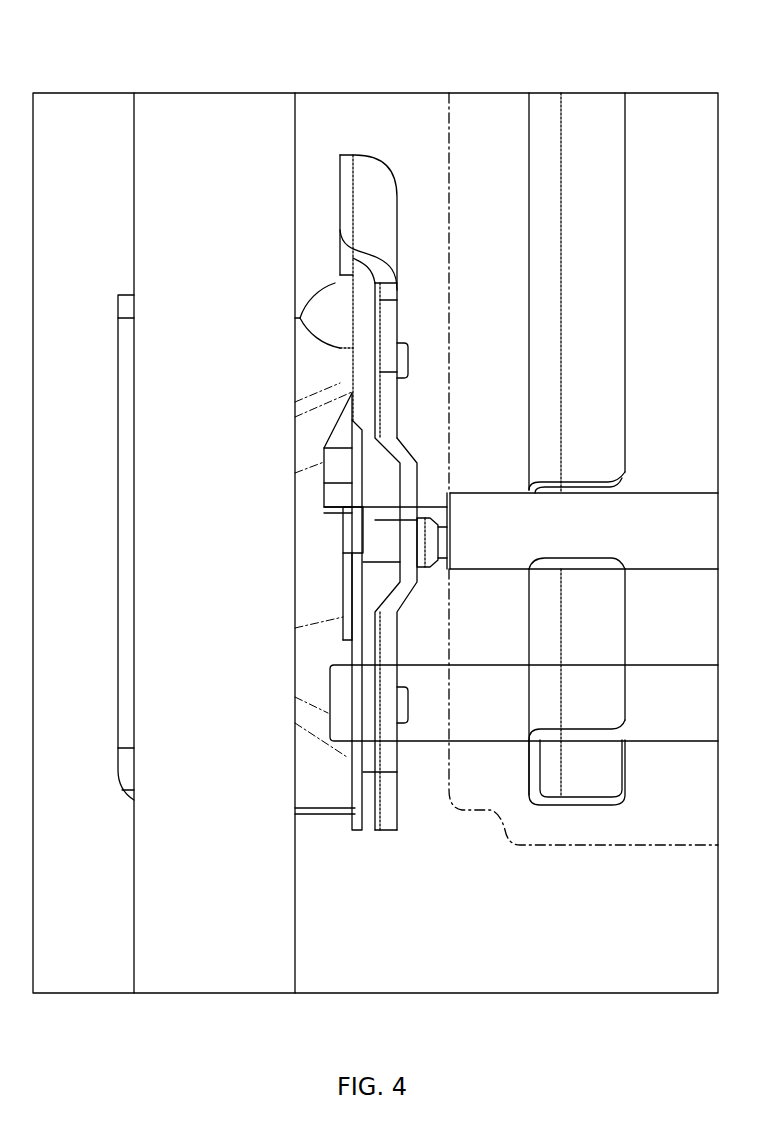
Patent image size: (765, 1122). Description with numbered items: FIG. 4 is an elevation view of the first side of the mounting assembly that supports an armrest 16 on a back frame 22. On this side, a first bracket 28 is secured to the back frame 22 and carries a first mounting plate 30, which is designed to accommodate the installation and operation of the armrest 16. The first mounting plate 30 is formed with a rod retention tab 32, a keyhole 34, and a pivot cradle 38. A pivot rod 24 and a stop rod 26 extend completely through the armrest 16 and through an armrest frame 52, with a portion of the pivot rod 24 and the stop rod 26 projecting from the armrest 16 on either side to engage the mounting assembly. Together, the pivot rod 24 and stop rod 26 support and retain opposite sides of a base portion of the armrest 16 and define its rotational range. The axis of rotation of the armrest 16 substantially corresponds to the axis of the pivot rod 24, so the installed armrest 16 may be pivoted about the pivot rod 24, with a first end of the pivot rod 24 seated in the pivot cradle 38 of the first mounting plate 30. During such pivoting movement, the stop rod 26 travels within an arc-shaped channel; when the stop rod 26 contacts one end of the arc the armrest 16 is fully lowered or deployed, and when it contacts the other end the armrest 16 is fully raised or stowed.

The armrest 16 is at (665, 240).
The back frame 22 is at (194, 191).
The pivot rod 24 is at (664, 540).
The stop rod 26 is at (664, 721).
The first bracket 28 is at (365, 177).
The first mounting plate 30 is at (363, 293).
The rod retention tab 32 is at (335, 493).
The keyhole 34 is at (357, 470).
The pivot cradle 38 is at (387, 563).
The armrest frame 52 is at (577, 325).